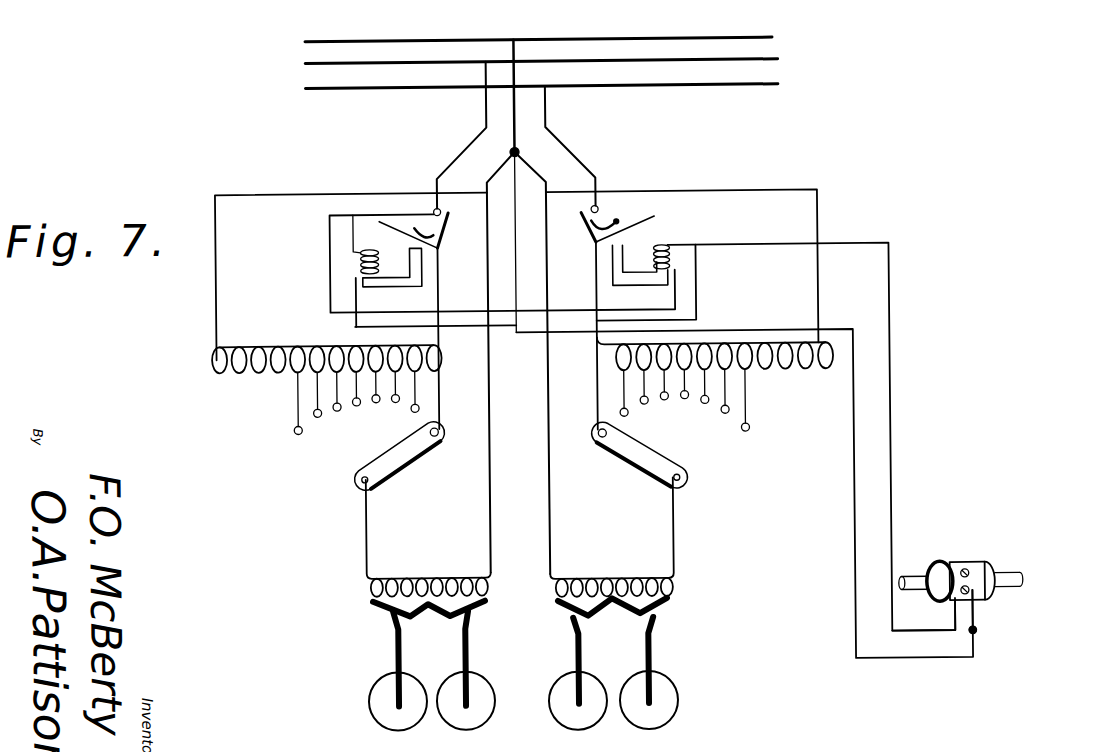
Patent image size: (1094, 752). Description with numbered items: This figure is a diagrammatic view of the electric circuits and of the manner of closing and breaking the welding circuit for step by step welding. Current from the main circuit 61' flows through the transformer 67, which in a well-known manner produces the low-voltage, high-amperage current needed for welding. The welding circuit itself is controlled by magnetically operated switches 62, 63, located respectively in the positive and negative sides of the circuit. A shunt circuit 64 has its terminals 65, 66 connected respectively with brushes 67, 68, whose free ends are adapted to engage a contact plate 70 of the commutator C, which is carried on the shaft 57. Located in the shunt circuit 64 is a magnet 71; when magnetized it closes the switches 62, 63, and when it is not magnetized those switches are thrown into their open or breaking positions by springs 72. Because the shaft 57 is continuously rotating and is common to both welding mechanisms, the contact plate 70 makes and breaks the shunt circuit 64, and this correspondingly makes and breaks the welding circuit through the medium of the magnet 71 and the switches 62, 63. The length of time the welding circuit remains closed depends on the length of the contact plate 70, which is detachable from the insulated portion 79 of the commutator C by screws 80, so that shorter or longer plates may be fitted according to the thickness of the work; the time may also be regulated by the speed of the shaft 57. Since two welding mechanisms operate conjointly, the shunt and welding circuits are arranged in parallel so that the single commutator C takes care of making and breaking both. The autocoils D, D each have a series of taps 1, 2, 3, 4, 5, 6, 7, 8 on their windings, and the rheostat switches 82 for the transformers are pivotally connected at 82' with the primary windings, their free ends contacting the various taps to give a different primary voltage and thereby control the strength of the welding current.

The main circuit 61' is at (508, 63).
The springs 72 is at (426, 229).
The magnetically operated switch 63 is at (427, 321).
The magnetically operated switch 62 is at (590, 239).
The shunt circuit 64 is at (330, 262).
The magnet 71 is at (400, 284).
The autocoil D is at (523, 401).
The tap 1 is at (519, 403).
The tap 2 is at (521, 392).
The tap 3 is at (522, 389).
The tap 4 is at (521, 387).
The tap 5 is at (523, 386).
The tap 6 is at (522, 388).
The tap 7 is at (521, 393).
The tap 8 is at (520, 387).
The rheostat switch 82 is at (521, 459).
The pivotal connection 82' is at (503, 491).
The transformer 67 is at (446, 564).
The commutator C is at (972, 561).
The insulated portion 79 is at (930, 570).
The contact plate 70 is at (977, 571).
The shaft 57 is at (1010, 580).
The screws 80 is at (967, 578).
The brush 68 is at (976, 623).
The terminal 65 is at (974, 637).
The terminal 66 is at (951, 636).